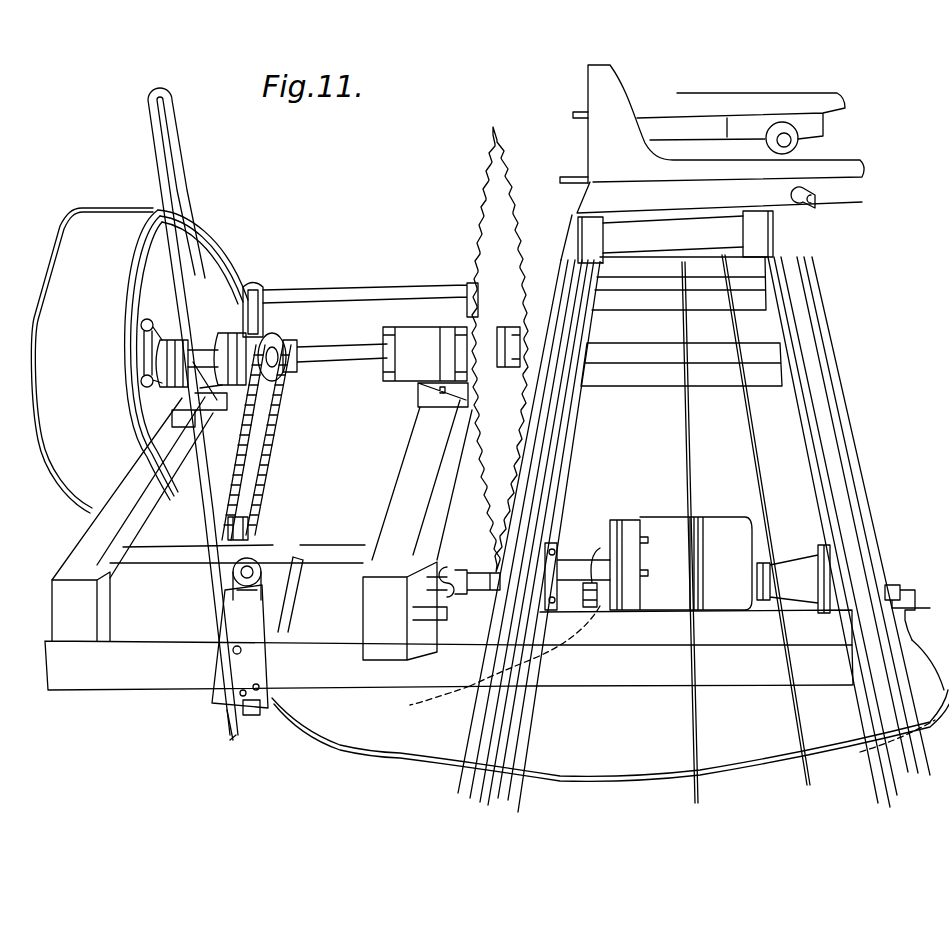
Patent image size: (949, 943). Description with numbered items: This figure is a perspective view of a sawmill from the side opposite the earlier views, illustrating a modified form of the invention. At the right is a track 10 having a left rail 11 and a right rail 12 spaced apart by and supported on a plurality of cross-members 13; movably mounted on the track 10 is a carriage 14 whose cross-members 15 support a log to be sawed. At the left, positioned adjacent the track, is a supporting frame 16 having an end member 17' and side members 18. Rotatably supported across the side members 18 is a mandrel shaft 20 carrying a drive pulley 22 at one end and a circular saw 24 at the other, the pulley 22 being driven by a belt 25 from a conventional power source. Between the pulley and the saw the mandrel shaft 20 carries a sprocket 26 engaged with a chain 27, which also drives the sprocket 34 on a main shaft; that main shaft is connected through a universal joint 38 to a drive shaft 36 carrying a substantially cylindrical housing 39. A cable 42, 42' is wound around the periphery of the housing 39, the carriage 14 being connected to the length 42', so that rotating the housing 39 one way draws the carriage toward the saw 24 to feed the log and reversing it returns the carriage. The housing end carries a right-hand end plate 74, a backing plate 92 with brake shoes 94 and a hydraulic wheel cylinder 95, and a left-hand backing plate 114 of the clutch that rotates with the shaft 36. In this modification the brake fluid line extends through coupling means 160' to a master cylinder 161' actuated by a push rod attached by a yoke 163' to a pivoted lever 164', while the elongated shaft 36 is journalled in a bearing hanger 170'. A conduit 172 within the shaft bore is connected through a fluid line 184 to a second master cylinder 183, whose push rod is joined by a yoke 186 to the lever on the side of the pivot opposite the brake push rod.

The track 10 is at (846, 445).
The left rail 11 is at (818, 405).
The right rail 12 is at (560, 458).
The cross-members 13 is at (638, 307).
The carriage 14 is at (784, 220).
The cross-members 15 is at (578, 178).
The supporting frame 16 is at (66, 696).
The end member 17' is at (244, 611).
The side members 18 is at (262, 488).
The mandrel shaft 20 is at (357, 362).
The drive pulley 22 is at (53, 233).
The circular saw 24 is at (500, 349).
The belt 25 is at (228, 263).
The sprocket 26 is at (282, 382).
The chain 27 is at (268, 447).
The sprocket 34 is at (251, 524).
The drive shaft 36 is at (488, 570).
The universal joint 38 is at (457, 593).
The housing 39 is at (665, 511).
The cable 42 is at (730, 520).
The cable length 42' is at (675, 532).
The right-hand end plate 74 is at (643, 512).
The backing plate 92 is at (611, 515).
The brake shoes 94 is at (633, 609).
The hydraulic wheel cylinder 95 is at (600, 548).
The left-hand backing plate 114 is at (746, 513).
The coupling means 160' is at (672, 679).
The master cylinder 161' is at (211, 579).
The yoke 163' is at (270, 632).
The lever 164' is at (191, 434).
The bearing hanger 170' is at (793, 569).
The conduit 172 is at (893, 585).
The master cylinder 183 is at (255, 716).
The fluid line 184 is at (558, 776).
The yoke 186 is at (226, 735).